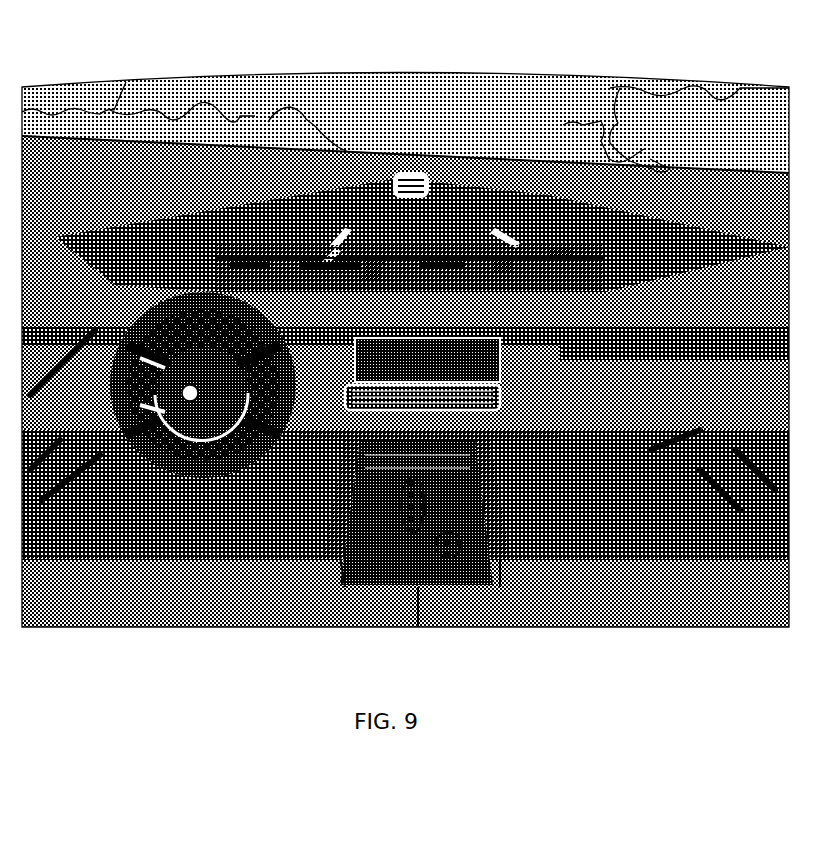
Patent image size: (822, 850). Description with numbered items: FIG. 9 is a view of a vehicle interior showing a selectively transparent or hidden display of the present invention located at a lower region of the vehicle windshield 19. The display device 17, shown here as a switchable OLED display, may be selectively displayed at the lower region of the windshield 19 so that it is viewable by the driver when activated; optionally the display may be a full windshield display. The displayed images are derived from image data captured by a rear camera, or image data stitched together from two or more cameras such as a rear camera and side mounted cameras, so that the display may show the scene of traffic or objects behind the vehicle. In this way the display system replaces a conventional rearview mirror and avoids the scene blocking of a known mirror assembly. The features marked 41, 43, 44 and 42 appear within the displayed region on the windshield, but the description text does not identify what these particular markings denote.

The display strip 41 is at (267, 268).
The left lane marking indicator 43 is at (377, 268).
The central display 44 is at (452, 347).
The right lane marking indicator 42 is at (500, 262).
The display device 17 is at (557, 252).
The windshield 19 is at (602, 88).